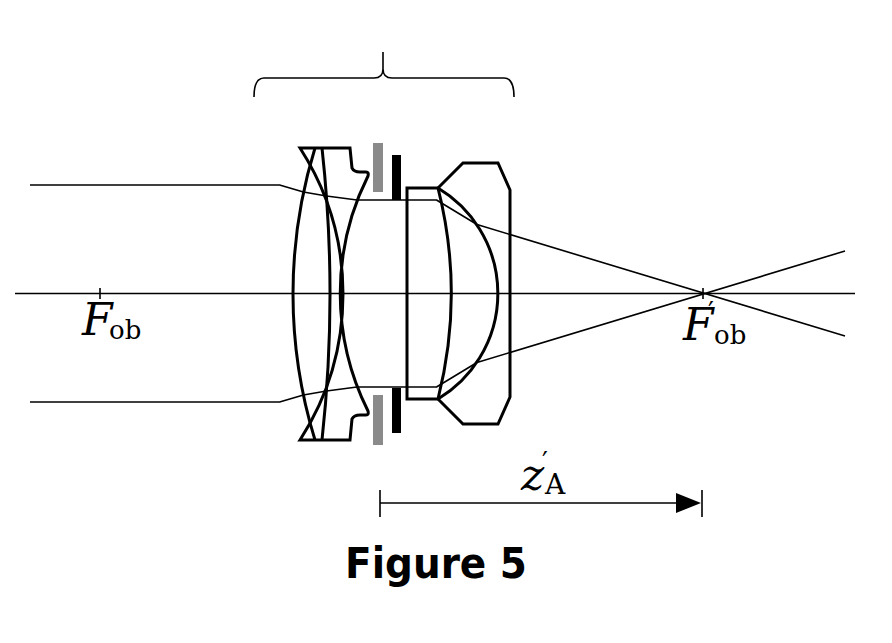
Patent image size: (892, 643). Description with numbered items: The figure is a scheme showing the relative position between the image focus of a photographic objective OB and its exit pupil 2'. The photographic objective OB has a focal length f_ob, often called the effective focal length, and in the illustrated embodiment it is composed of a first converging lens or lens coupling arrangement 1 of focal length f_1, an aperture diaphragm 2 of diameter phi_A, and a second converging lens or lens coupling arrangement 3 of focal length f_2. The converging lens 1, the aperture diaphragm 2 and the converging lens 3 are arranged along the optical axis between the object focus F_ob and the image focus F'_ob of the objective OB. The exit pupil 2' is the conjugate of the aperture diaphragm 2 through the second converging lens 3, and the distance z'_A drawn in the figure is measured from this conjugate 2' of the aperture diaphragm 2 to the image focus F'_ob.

The converging lens L1 1 is at (330, 272).
The aperture diaphragm 2 is at (416, 276).
The exit pupil 2' is at (388, 315).
The converging lens L2 3 is at (458, 262).
The photographic objective OB is at (384, 57).